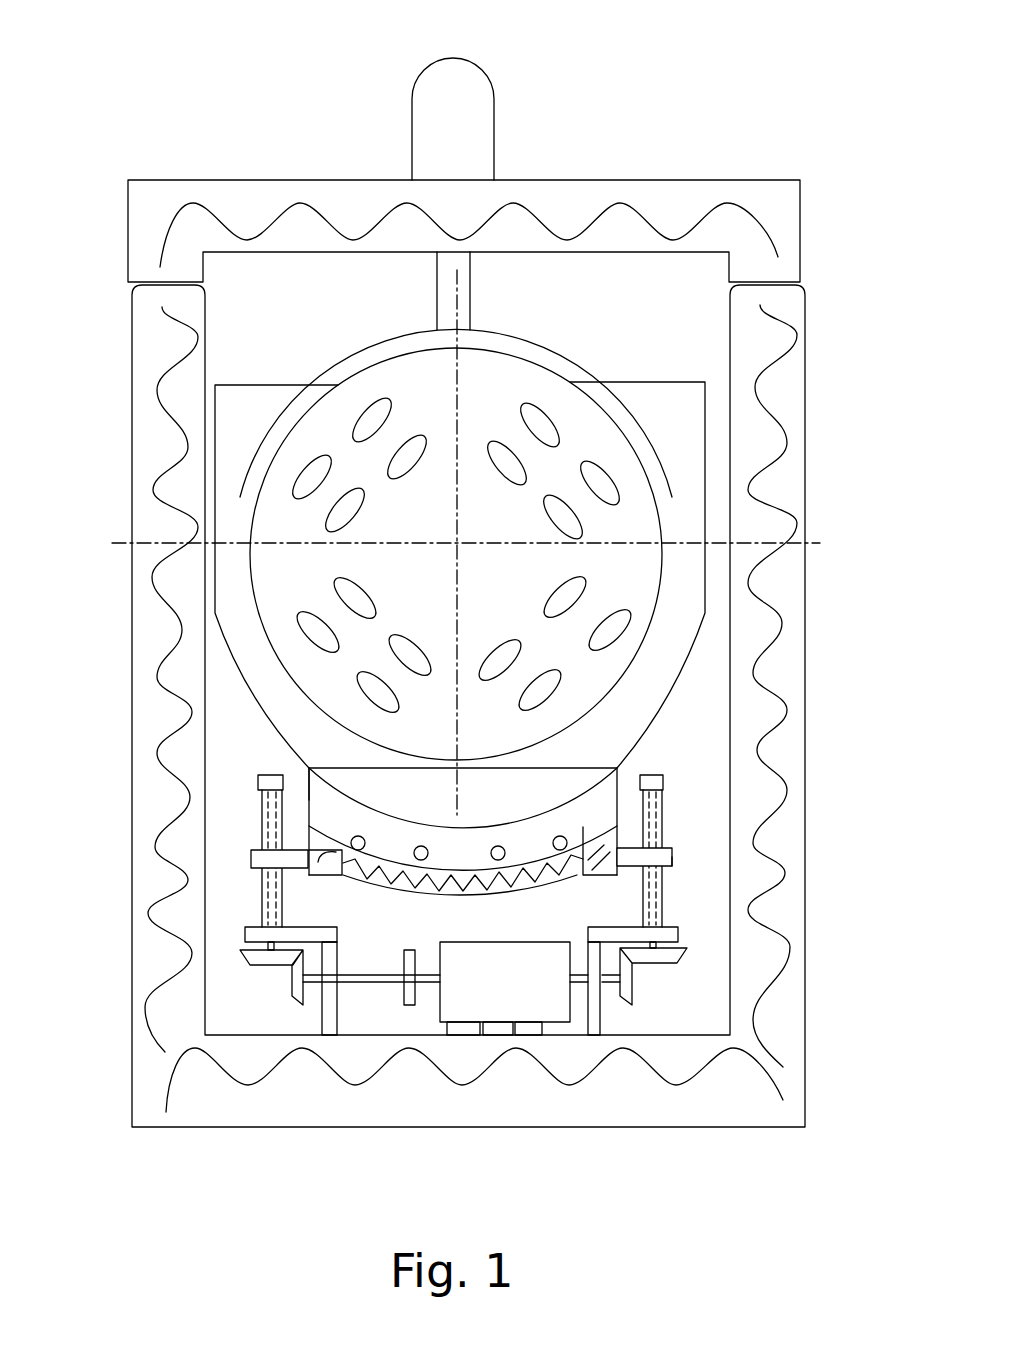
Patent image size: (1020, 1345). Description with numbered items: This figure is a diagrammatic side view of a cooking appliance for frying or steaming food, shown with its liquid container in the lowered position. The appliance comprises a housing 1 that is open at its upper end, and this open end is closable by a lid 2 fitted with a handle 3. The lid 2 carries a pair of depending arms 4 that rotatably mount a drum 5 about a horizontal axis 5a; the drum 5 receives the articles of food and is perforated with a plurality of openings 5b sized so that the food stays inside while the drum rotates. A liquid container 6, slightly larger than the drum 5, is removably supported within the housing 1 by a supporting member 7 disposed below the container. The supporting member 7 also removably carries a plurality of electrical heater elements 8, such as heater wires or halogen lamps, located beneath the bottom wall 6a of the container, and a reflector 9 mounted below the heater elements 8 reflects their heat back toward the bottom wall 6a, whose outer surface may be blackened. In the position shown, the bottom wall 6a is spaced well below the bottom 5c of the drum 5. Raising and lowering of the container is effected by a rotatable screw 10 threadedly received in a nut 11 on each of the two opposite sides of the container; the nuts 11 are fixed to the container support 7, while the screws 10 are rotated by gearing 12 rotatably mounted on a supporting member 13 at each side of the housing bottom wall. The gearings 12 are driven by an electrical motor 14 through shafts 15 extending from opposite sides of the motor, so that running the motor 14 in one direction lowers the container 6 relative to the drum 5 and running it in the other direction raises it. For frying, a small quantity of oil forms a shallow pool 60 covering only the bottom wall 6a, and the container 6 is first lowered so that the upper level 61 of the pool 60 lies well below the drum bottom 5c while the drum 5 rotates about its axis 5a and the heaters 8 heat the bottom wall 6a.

The housing 1 is at (137, 447).
The lid 2 is at (150, 214).
The handle 3 is at (440, 105).
The depending arms 4 is at (460, 298).
The drum 5 is at (413, 382).
The horizontal axis 5a is at (456, 543).
The openings 5b is at (498, 452).
The drum bottom 5c is at (463, 760).
The liquid container 6 is at (707, 438).
The bottom wall 6a is at (473, 823).
The pool of oil 60 is at (582, 776).
The upper level 61 is at (347, 765).
The supporting member 7 is at (305, 804).
The electrical heater elements 8 is at (615, 818).
The reflector 9 is at (393, 888).
The rotatable screw 10 is at (662, 835).
The nut 11 is at (672, 857).
The gearing 12 is at (640, 972).
The supporting member 13 is at (596, 1022).
The electrical motor 14 is at (495, 1022).
The shafts 15 is at (378, 985).